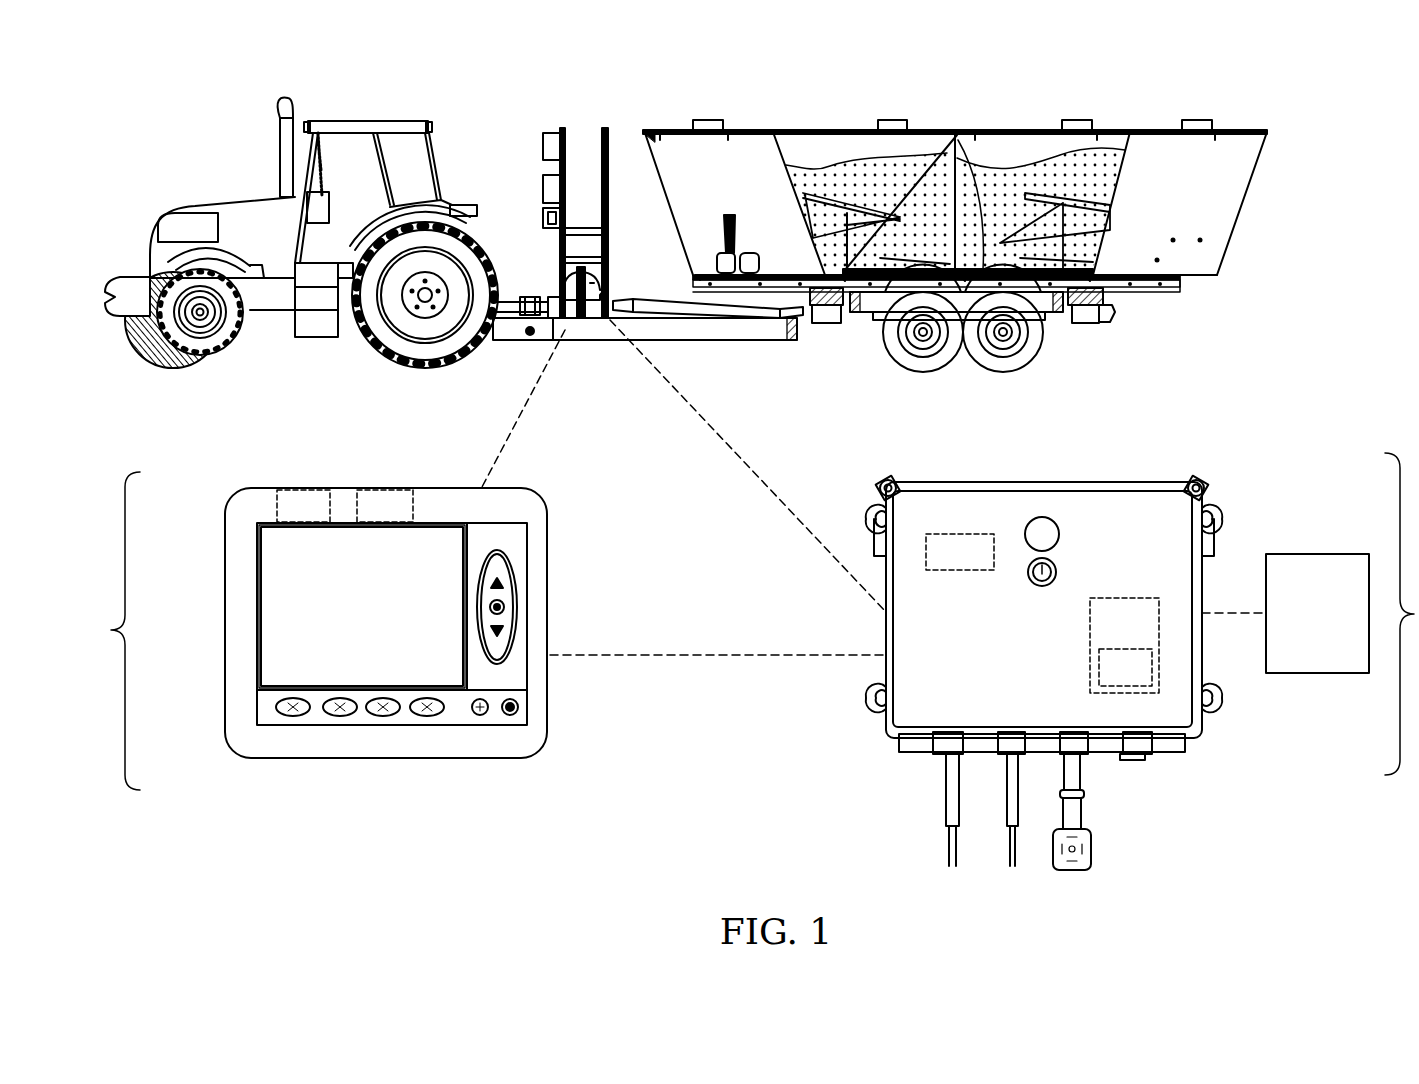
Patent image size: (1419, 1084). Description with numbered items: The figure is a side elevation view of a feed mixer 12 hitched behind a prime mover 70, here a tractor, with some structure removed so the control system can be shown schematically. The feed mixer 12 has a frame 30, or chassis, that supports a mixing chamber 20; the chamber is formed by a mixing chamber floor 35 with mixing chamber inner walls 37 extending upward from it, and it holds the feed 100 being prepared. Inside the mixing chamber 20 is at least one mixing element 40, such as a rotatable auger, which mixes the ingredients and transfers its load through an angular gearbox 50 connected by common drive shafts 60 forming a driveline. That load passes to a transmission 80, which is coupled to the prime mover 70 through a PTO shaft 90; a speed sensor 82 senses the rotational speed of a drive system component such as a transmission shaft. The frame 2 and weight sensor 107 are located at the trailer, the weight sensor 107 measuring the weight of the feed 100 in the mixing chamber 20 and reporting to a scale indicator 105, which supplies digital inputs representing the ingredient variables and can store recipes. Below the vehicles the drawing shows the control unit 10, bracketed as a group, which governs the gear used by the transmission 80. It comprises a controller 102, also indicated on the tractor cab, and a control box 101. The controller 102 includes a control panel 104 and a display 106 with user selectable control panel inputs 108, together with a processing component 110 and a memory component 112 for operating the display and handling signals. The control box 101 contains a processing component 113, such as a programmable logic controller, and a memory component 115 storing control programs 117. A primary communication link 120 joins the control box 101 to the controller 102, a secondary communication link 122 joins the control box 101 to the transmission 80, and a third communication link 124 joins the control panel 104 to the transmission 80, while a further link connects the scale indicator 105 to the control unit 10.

The trailer frame 2 is at (1169, 302).
The control unit 10 is at (111, 631).
The feed mixer 12 is at (1270, 191).
The mixing chamber 20 is at (1112, 140).
The frame 30 is at (739, 352).
The mixing chamber floor 35 is at (950, 134).
The mixing chamber inner walls 37 is at (667, 176).
The mixing element 40 is at (803, 199).
The angular gearbox 50 is at (821, 340).
The drive shafts 60 is at (639, 300).
The prime mover 70 is at (352, 104).
The transmission 80 is at (565, 278).
The speed sensor 82 is at (555, 312).
The PTO shaft 90 is at (511, 320).
The feed 100 is at (1010, 175).
The control box 101 is at (543, 190).
The controller 102 is at (316, 203).
The control panel 104 is at (270, 634).
The scale indicator 105 is at (543, 147).
The display 106 is at (377, 617).
The weight sensor 107 is at (1095, 326).
The control panel inputs 108 is at (383, 718).
The processing component 110 is at (318, 517).
The memory component 112 is at (400, 517).
The processing component 113 is at (976, 565).
The memory component 115 is at (1143, 638).
The control programs 117 is at (1143, 682).
The primary communication link 120 is at (715, 655).
The secondary communication link 122 is at (740, 465).
The third communication link 124 is at (520, 417).